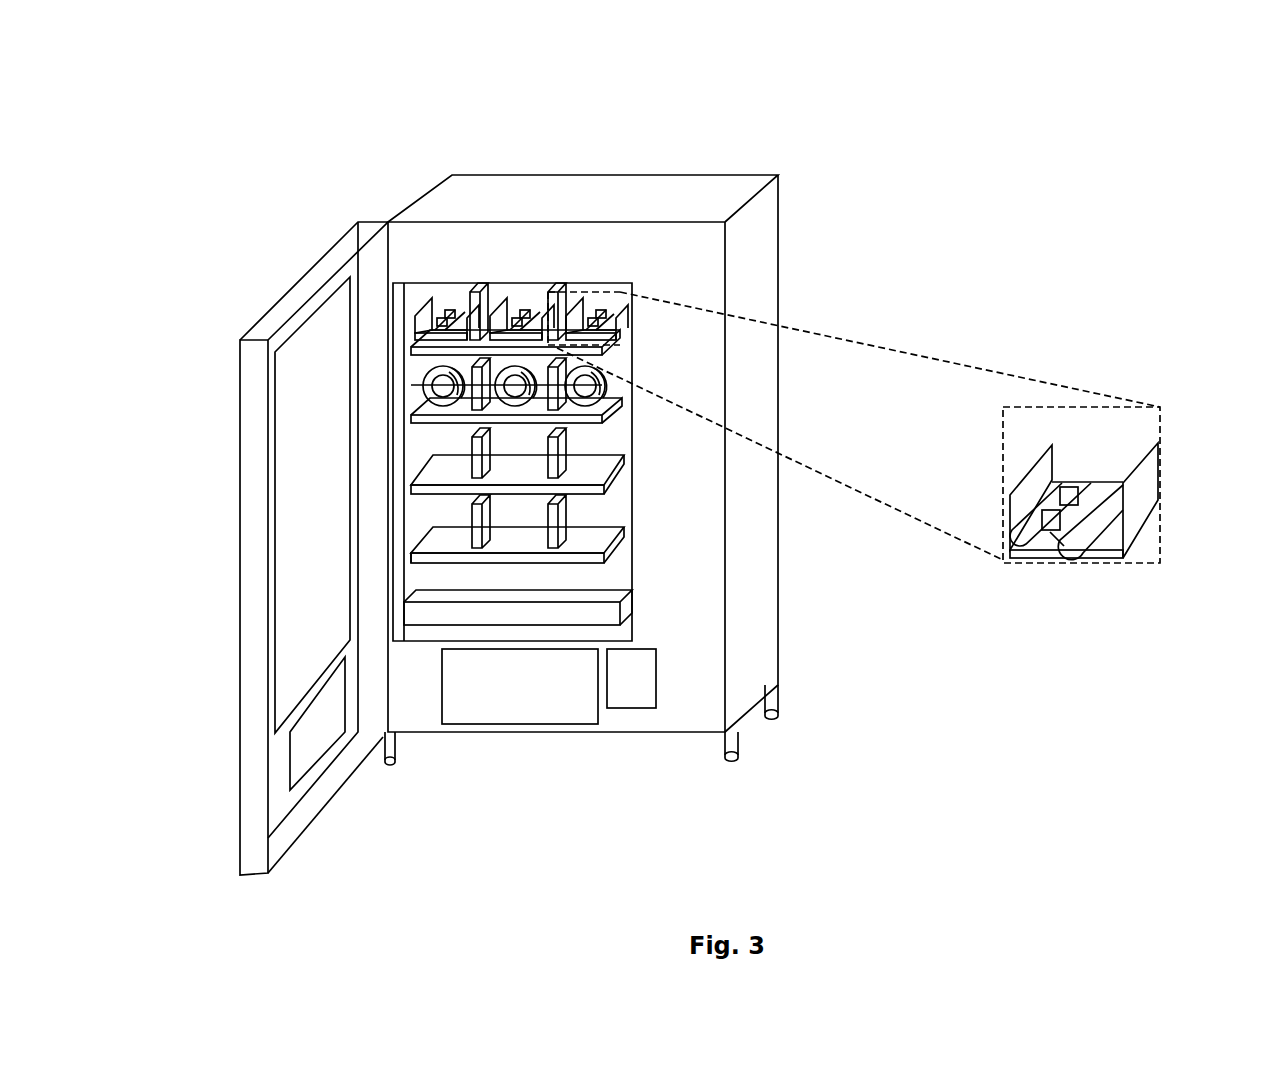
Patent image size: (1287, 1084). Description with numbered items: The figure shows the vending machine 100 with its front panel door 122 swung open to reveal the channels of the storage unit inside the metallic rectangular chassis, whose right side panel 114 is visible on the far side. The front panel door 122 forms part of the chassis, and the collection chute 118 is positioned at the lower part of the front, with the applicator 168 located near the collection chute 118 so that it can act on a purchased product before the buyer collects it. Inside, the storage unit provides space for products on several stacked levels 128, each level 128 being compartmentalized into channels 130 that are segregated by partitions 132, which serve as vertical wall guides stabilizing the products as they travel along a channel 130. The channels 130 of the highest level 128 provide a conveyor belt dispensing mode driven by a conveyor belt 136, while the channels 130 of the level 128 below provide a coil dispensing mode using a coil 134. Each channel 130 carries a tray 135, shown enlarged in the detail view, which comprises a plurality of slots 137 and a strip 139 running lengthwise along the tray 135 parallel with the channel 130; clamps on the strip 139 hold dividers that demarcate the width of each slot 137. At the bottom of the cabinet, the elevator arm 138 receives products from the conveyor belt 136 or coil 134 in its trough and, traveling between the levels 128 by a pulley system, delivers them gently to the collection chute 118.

The vending machine 100 is at (374, 96).
The right side panel 114 is at (581, 470).
The collection chute 118 is at (520, 686).
The front panel door 122 is at (250, 577).
The level 128 is at (606, 558).
The channel 130 is at (590, 520).
The partition 132 is at (590, 463).
The coil 134 is at (600, 368).
The tray 135 is at (1133, 512).
The conveyor belt 136 is at (1077, 525).
The slot 137 is at (1122, 470).
The elevator arm 138 is at (600, 612).
The strip 139 is at (1043, 533).
The applicator 168 is at (631, 678).